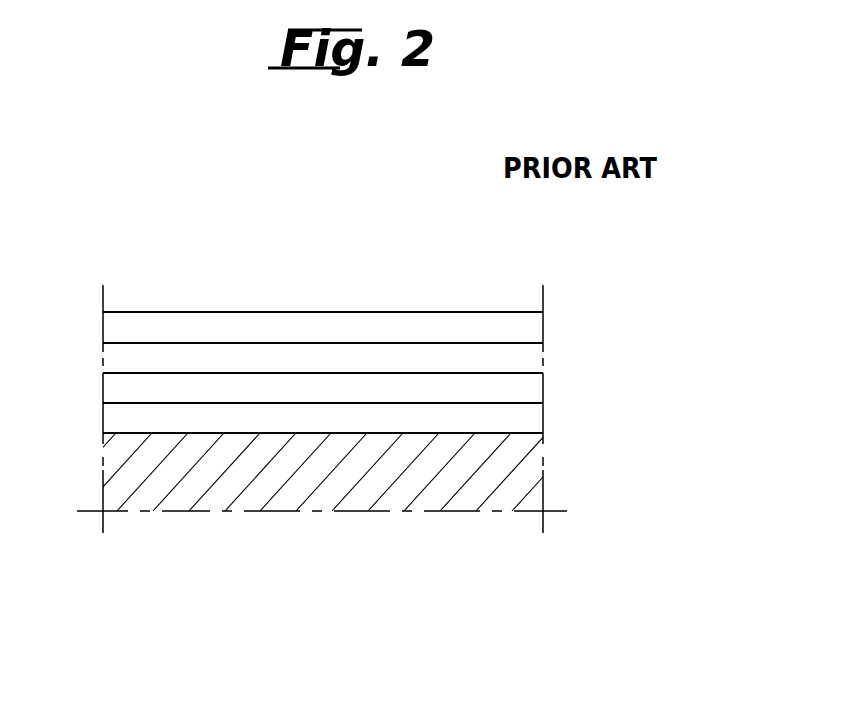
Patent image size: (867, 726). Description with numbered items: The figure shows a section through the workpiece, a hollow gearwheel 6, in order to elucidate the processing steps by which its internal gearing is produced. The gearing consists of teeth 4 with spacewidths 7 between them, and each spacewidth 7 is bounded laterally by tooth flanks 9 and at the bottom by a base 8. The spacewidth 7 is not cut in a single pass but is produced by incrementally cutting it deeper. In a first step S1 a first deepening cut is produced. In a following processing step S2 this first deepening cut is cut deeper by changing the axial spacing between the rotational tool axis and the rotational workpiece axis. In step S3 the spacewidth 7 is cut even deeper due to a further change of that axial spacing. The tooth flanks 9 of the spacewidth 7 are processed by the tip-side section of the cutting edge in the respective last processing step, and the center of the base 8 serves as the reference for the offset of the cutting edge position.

The tooth 4 is at (268, 312).
The spacewidth 7 is at (124, 308).
The tooth flank 9 is at (163, 325).
The first step S1 is at (354, 343).
The processing step S2 is at (355, 372).
The step S3 is at (438, 403).
The base of the spacewidth 8 is at (216, 433).
The hollow gearwheel 6 is at (497, 467).